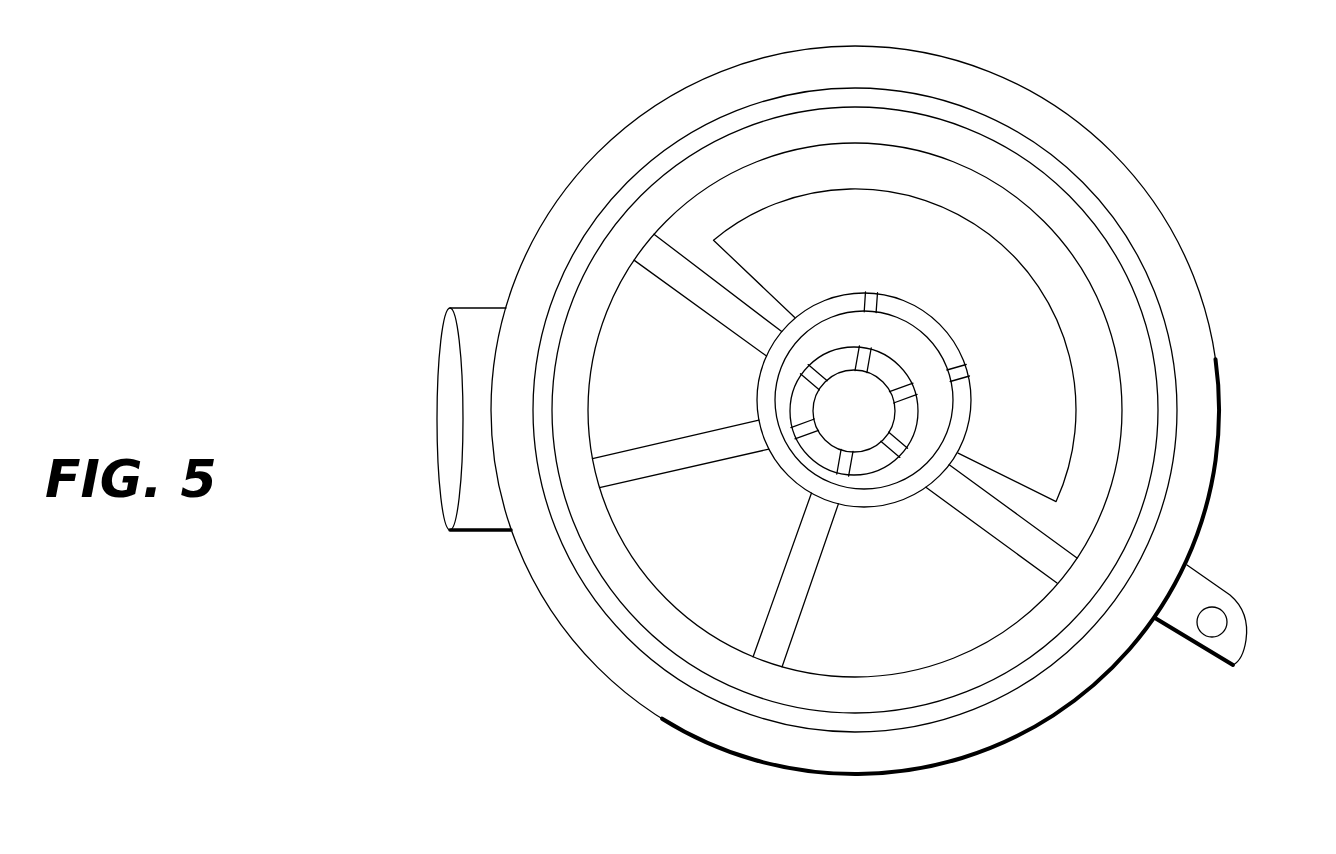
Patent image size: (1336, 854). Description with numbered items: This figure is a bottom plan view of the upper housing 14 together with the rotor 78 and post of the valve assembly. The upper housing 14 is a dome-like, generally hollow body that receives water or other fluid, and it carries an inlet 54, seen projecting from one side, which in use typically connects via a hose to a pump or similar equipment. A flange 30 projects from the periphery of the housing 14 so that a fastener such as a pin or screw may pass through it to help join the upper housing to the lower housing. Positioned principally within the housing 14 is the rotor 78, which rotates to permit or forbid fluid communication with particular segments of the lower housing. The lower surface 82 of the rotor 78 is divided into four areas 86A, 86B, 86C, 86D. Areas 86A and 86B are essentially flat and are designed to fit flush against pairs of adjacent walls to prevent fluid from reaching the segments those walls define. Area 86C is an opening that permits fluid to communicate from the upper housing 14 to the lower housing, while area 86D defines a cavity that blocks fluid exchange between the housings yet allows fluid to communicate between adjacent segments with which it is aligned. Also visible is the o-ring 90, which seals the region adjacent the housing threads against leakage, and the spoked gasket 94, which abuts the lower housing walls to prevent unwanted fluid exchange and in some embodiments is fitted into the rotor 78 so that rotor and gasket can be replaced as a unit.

The upper housing 14 is at (1118, 158).
The flange 30 is at (1230, 598).
The inlet 54 is at (447, 432).
The rotor 78 is at (1197, 340).
The lower surface 82 is at (1023, 247).
The area 86A is at (697, 371).
The area 86B is at (940, 608).
The area 86C is at (727, 571).
The area 86D is at (975, 283).
The o-ring 90 is at (612, 205).
The gasket 94 is at (935, 135).